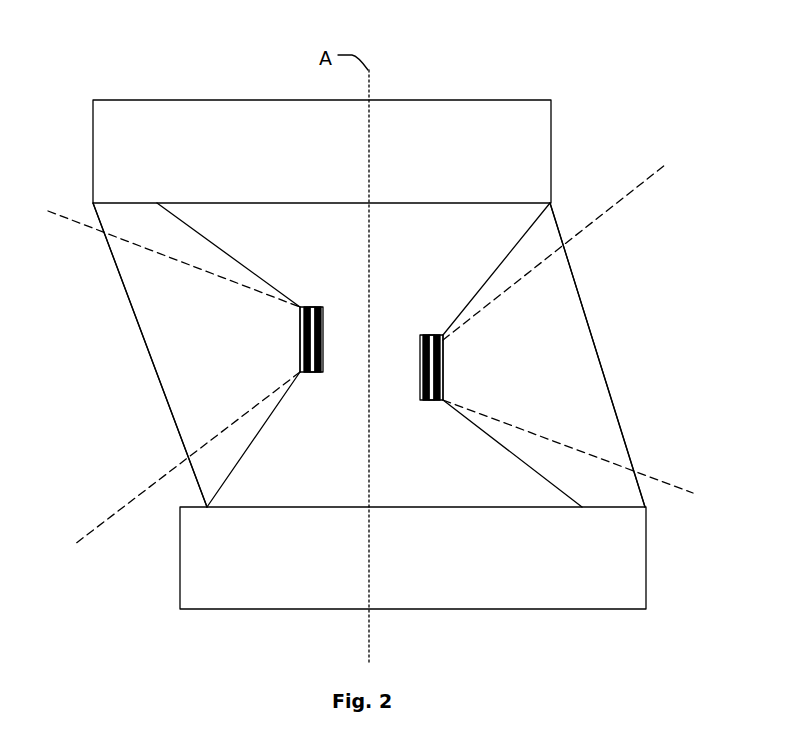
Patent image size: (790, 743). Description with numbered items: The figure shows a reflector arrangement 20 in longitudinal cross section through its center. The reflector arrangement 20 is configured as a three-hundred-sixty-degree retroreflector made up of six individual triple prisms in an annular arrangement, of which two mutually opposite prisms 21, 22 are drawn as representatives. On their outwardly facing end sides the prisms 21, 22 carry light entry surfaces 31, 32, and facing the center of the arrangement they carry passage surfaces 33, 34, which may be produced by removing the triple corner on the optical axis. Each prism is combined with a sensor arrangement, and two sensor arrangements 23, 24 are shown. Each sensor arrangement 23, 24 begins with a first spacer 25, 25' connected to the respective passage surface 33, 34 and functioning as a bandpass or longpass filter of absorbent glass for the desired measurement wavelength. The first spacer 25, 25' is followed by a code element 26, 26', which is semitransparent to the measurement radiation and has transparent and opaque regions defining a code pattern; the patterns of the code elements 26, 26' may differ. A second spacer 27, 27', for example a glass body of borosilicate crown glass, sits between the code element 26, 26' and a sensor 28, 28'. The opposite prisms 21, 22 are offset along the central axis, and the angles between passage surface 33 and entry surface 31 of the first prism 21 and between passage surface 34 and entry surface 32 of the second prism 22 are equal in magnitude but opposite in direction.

The reflector arrangement 20 is at (582, 62).
The first prism 21 is at (155, 310).
The second prism 22 is at (557, 307).
The sensor arrangement 23 is at (311, 350).
The sensor arrangement 24 is at (436, 340).
The first spacer 25 is at (323, 392).
The code element 26 is at (329, 379).
The second spacer 27 is at (334, 365).
The sensor 28 is at (347, 345).
The first spacer 25' is at (413, 307).
The code element 26' is at (411, 322).
The second spacer 27' is at (408, 337).
The sensor 28' is at (396, 361).
The light entry surface 31 is at (156, 366).
The light entry surface 32 is at (600, 375).
The passage surface 33 is at (290, 327).
The passage surface 34 is at (455, 352).